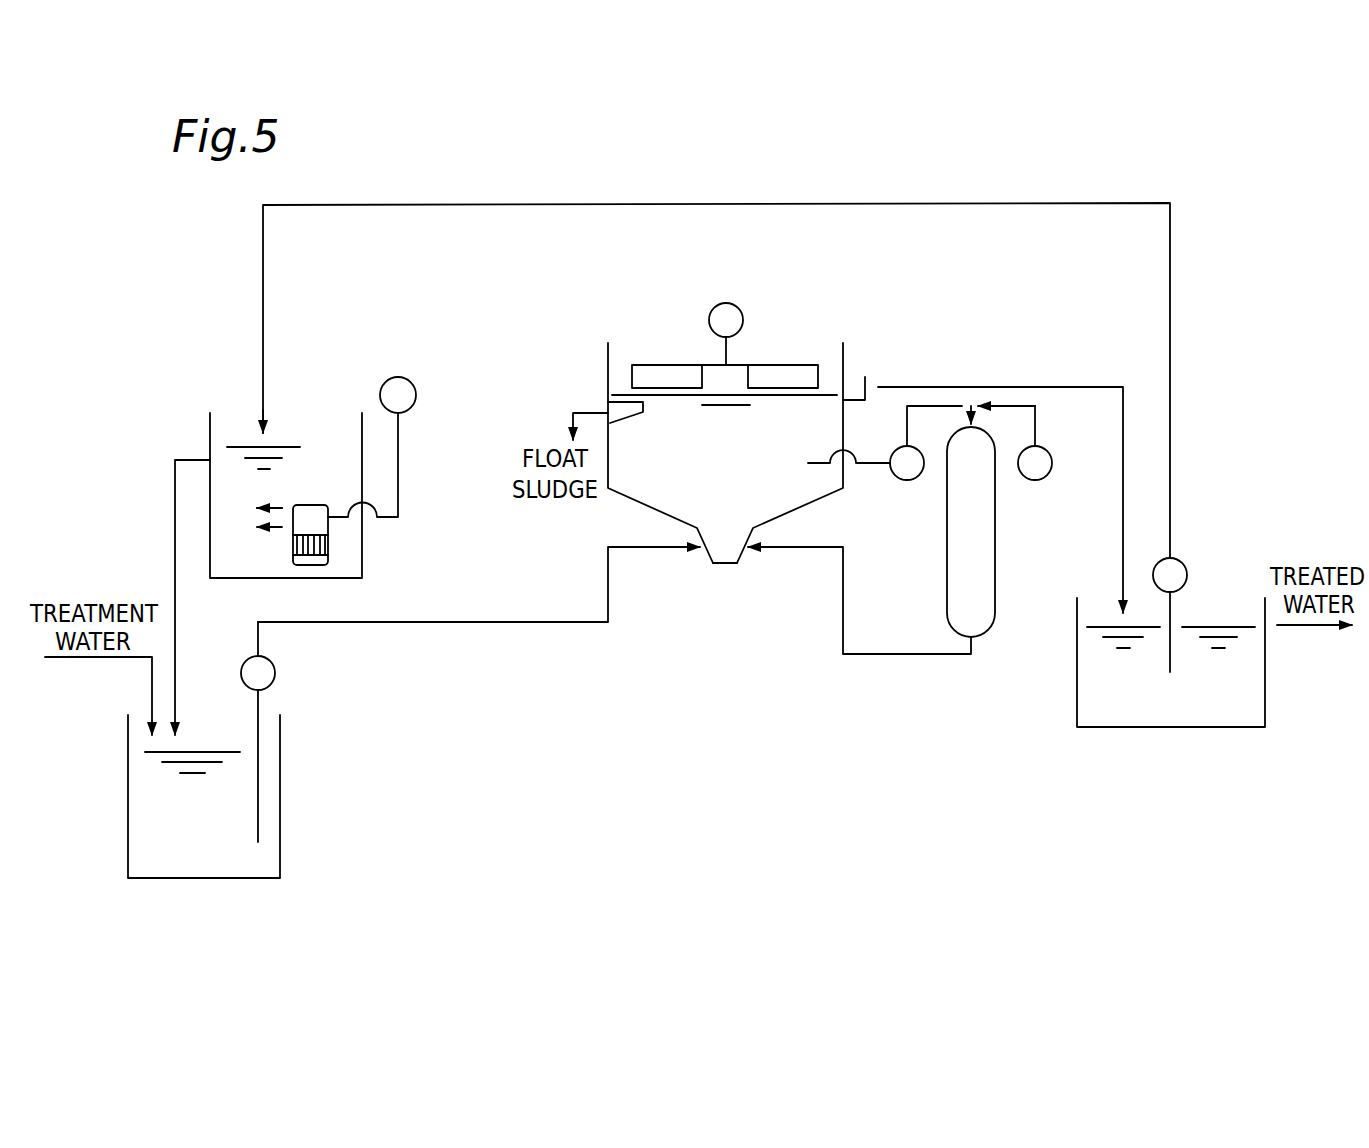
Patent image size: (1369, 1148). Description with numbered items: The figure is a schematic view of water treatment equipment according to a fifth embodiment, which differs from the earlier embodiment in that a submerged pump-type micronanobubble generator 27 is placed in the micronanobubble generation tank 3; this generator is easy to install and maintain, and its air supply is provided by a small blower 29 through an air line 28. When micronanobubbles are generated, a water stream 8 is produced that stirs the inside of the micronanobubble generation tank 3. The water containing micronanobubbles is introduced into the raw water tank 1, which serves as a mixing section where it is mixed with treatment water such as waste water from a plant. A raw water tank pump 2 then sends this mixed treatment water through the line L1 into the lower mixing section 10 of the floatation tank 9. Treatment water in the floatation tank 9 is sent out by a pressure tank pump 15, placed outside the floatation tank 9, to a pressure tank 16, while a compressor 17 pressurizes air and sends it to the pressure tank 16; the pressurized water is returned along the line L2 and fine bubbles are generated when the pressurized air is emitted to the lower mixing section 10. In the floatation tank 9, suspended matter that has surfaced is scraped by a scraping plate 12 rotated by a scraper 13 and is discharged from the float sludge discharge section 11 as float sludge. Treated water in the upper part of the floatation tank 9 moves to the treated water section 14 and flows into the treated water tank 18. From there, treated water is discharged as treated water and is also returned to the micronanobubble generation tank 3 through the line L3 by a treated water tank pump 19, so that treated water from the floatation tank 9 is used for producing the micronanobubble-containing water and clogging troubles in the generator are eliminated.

The raw water tank 1 is at (128, 783).
The raw water tank pump 2 is at (276, 673).
The micronanobubble generation tank 3 is at (200, 428).
The water stream 8 is at (277, 528).
The floatation tank 9 is at (605, 392).
The lower mixing section 10 is at (743, 565).
The float sludge discharge section 11 is at (618, 397).
The scraping plate 12 is at (667, 372).
The scraper 13 is at (728, 302).
The treated water section 14 is at (868, 380).
The pressure tank pump 15 is at (907, 481).
The pressure tank 16 is at (947, 594).
The compressor 17 is at (1035, 481).
The treated water tank 18 is at (1077, 657).
The treated water tank pump 19 is at (1177, 554).
The submerged pump-type micronanobubble generator 27 is at (322, 560).
The air line 28 is at (398, 483).
The small blower 29 is at (399, 377).
The line L1 is at (493, 625).
The line L2 is at (900, 657).
The line L3 is at (1031, 201).